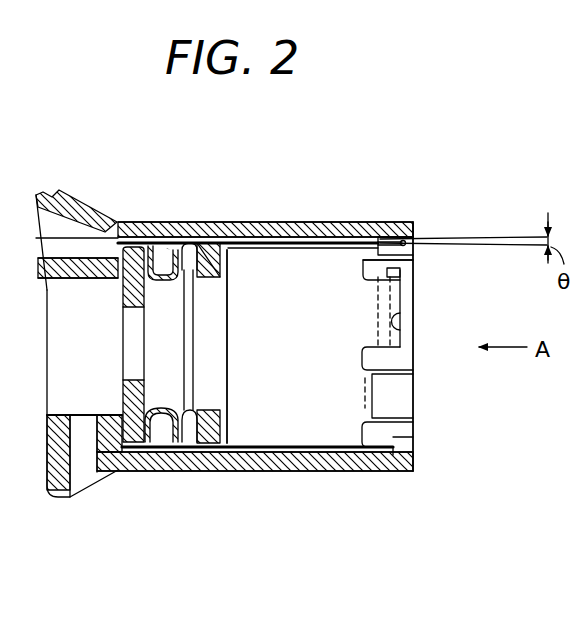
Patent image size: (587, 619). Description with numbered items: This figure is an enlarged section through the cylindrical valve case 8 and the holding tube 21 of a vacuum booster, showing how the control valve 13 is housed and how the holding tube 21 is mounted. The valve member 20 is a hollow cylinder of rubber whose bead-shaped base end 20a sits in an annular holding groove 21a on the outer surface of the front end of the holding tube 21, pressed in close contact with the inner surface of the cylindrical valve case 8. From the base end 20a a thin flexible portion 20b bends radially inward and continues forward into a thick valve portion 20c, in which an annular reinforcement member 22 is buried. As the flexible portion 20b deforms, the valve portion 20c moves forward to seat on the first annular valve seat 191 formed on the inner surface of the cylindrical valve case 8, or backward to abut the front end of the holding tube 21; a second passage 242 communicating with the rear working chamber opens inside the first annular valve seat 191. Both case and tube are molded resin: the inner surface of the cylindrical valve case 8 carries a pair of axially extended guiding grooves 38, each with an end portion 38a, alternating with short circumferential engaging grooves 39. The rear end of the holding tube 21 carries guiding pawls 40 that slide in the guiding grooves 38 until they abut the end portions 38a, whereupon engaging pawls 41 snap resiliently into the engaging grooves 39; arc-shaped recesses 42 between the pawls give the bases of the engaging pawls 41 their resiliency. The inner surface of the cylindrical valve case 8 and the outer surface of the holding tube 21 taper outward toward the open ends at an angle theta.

The first annular valve seat 191 is at (121, 248).
The annular reinforcement member 22 is at (150, 252).
The control valve 13 is at (186, 250).
The cylindrical valve case 8 is at (222, 245).
The holding tube 21 is at (293, 222).
The annular holding groove 21a is at (228, 285).
The guiding groove 38 is at (410, 240).
The end portion of guiding groove 38a is at (380, 240).
The engaging groove 39 is at (401, 334).
The guiding pawl 40 is at (373, 408).
The engaging pawl 41 is at (396, 293).
The arc-shaped recess 42 is at (370, 340).
The valve member 20 is at (280, 527).
The base end 20a is at (218, 472).
The flexible portion 20b is at (171, 472).
The valve portion 20c is at (138, 472).
The second passage 242 is at (74, 495).